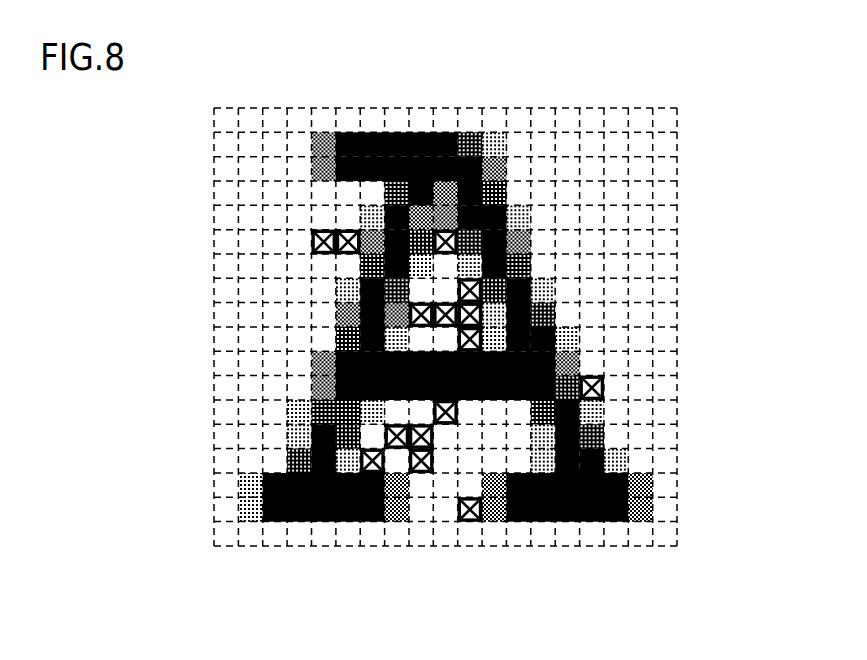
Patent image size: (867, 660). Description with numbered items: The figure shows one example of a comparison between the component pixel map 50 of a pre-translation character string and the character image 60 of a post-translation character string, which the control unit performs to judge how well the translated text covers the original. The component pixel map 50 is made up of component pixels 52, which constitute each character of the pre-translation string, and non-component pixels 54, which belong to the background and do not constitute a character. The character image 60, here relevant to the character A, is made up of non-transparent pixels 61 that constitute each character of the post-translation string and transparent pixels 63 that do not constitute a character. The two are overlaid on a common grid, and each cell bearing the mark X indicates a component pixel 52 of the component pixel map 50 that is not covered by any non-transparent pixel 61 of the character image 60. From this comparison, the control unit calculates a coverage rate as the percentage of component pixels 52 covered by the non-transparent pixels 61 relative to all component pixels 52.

The component pixel map 50 is at (690, 83).
The character image 60 is at (445, 325).
The non-component pixels 54 is at (445, 325).
The transparent pixels 63 is at (540, 108).
The non-transparent pixels 61 is at (324, 131).
The component pixels 52 is at (470, 524).